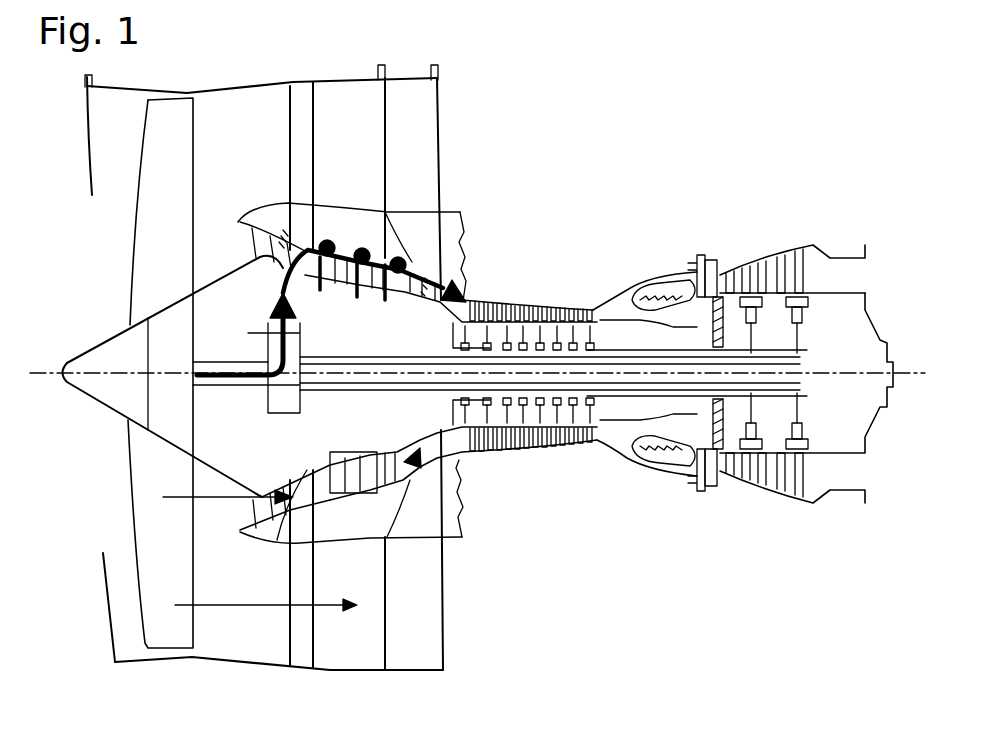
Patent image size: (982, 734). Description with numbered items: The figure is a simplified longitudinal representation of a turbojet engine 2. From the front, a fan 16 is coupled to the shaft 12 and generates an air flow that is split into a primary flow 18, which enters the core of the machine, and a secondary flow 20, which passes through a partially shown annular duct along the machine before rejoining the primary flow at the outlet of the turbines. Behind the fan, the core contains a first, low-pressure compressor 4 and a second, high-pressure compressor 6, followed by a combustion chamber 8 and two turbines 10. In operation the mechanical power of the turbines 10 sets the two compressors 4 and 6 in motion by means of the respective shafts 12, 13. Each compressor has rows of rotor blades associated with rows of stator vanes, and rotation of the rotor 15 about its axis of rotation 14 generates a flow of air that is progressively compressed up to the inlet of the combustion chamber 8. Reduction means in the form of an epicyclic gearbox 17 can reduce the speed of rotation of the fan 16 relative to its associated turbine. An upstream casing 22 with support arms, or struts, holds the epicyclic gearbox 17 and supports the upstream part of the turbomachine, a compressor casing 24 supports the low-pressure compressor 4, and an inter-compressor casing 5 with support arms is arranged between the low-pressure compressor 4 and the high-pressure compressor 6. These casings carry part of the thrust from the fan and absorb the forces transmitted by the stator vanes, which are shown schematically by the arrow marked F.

The turbojet engine 2 is at (582, 553).
The low-pressure compressor 4 is at (370, 187).
The inter-compressor casing 5 is at (422, 302).
The high-pressure compressor 6 is at (538, 271).
The combustion chamber 8 is at (630, 300).
The turbines 10 is at (747, 231).
The shaft 12 is at (800, 386).
The shaft 13 is at (612, 398).
The axis of rotation 14 is at (97, 378).
The rotor 15 is at (358, 323).
The fan 16 is at (176, 260).
The epicyclic gearbox 17 is at (297, 405).
The primary flow 18 is at (222, 500).
The secondary flow 20 is at (258, 605).
The upstream casing 22 is at (280, 262).
The compressor casing 24 is at (344, 233).